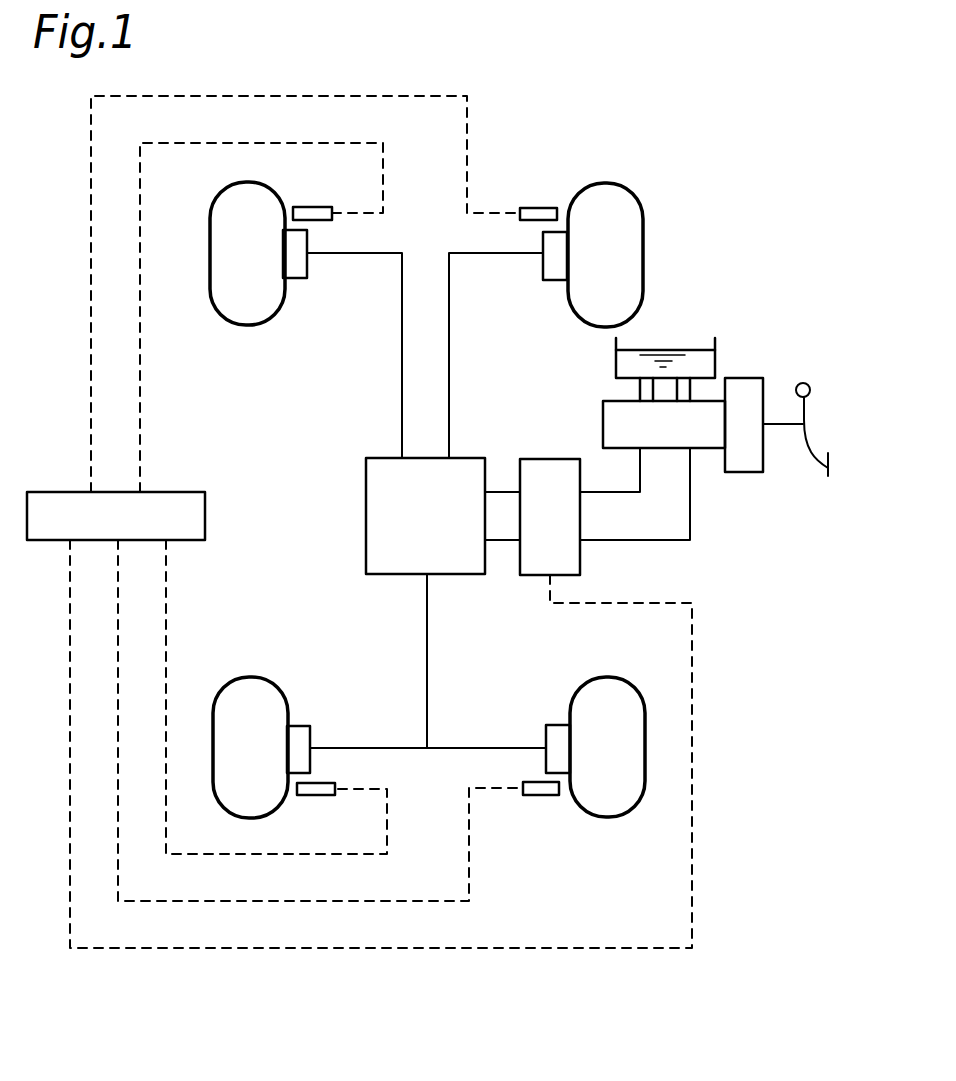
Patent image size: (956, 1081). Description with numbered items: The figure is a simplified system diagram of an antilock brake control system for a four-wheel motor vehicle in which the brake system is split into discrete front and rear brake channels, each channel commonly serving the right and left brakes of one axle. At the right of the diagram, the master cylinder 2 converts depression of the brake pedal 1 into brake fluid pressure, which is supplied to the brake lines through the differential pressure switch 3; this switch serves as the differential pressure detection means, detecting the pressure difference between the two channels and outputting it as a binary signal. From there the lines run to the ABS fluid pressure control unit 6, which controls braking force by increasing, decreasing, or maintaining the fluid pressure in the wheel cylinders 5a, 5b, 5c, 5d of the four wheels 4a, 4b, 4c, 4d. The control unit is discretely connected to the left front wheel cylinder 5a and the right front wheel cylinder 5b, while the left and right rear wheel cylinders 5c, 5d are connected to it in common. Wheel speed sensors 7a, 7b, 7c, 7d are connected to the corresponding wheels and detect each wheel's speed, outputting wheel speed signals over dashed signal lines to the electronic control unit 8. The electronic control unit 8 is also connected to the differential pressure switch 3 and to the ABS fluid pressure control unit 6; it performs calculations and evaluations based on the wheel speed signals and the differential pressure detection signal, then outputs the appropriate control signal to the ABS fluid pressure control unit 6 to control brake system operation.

The brake pedal 1 is at (807, 410).
The master cylinder 2 is at (602, 425).
The differential pressure switch 3 is at (582, 562).
The left front wheel 4a is at (247, 305).
The right front wheel 4b is at (643, 253).
The left rear wheel 4c is at (247, 676).
The right rear wheel 4d is at (607, 817).
The left front wheel cylinder 5a is at (297, 265).
The right front wheel cylinder 5b is at (555, 272).
The left rear wheel cylinder 5c is at (312, 737).
The right rear wheel cylinder 5d is at (545, 728).
The ABS fluid pressure control unit 6 is at (365, 508).
The wheel speed sensor 7a is at (310, 205).
The wheel speed sensor 7b is at (538, 207).
The wheel speed sensor 7c is at (318, 795).
The wheel speed sensor 7d is at (541, 795).
The electronic control unit 8 is at (170, 492).